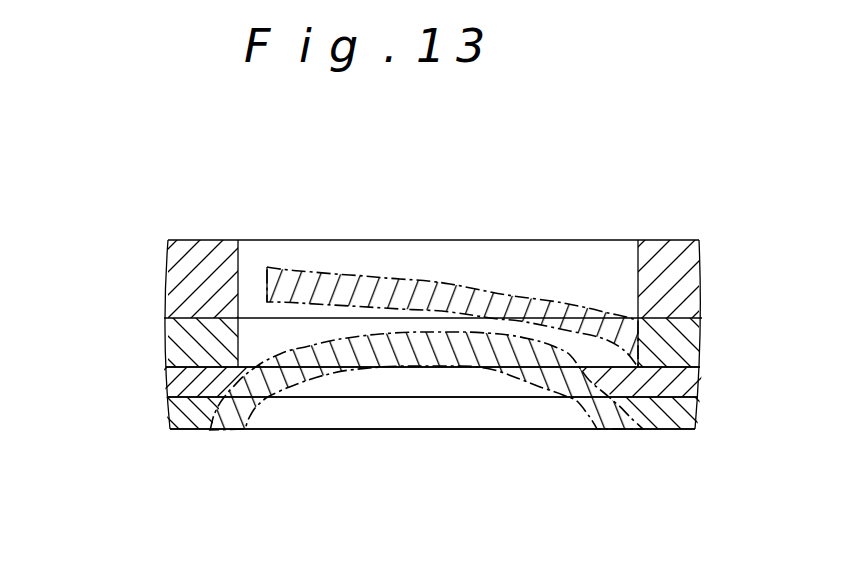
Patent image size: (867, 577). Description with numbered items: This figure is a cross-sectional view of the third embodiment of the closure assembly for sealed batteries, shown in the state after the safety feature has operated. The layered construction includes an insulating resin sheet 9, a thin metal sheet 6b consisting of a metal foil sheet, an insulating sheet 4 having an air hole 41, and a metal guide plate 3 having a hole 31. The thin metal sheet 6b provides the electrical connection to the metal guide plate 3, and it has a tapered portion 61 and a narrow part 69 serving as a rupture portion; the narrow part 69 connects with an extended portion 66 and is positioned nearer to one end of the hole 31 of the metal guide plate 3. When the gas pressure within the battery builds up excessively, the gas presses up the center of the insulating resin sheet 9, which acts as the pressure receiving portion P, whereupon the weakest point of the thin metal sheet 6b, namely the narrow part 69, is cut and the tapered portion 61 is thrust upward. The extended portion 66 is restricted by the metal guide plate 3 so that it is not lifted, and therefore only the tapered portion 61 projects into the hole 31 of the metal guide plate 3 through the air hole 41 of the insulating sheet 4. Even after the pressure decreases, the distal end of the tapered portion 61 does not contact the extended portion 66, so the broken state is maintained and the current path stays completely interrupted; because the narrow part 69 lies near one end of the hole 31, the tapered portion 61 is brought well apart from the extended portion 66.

The metal guide plate 3 is at (663, 268).
The hole of the metal guide plate 31 is at (638, 279).
The insulating sheet 4 is at (188, 344).
The air hole 41 is at (240, 345).
The tapered portion 61 is at (357, 268).
The narrow part 69 is at (264, 262).
The extended portion 66 is at (212, 431).
The thin metal sheet 6b is at (190, 383).
The insulating resin sheet 9 is at (647, 405).
The pressure receiving portion P is at (409, 382).